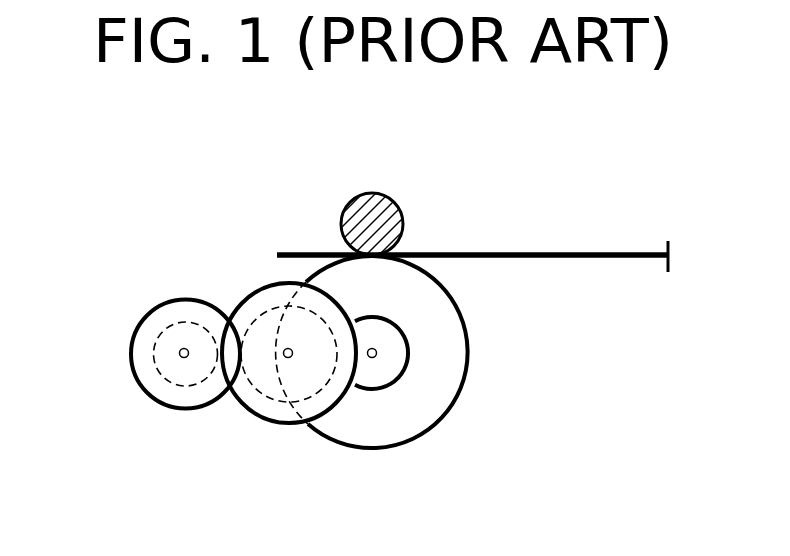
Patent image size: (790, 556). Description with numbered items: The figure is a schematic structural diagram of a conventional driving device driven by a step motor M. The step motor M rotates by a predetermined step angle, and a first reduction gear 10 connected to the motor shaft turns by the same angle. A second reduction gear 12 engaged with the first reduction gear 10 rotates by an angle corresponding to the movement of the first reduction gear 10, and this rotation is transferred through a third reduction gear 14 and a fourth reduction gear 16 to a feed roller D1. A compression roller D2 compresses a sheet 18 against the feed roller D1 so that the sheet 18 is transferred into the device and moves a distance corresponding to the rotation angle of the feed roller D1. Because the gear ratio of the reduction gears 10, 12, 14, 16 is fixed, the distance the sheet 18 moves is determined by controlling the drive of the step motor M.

The first reduction gear 10 is at (155, 355).
The second reduction gear 12 is at (272, 423).
The third reduction gear 14 is at (267, 306).
The fourth reduction gear 16 is at (383, 388).
The sheet 18 is at (540, 252).
The step motor M is at (183, 408).
The feed roller D1 is at (433, 405).
The compression roller D2 is at (367, 195).